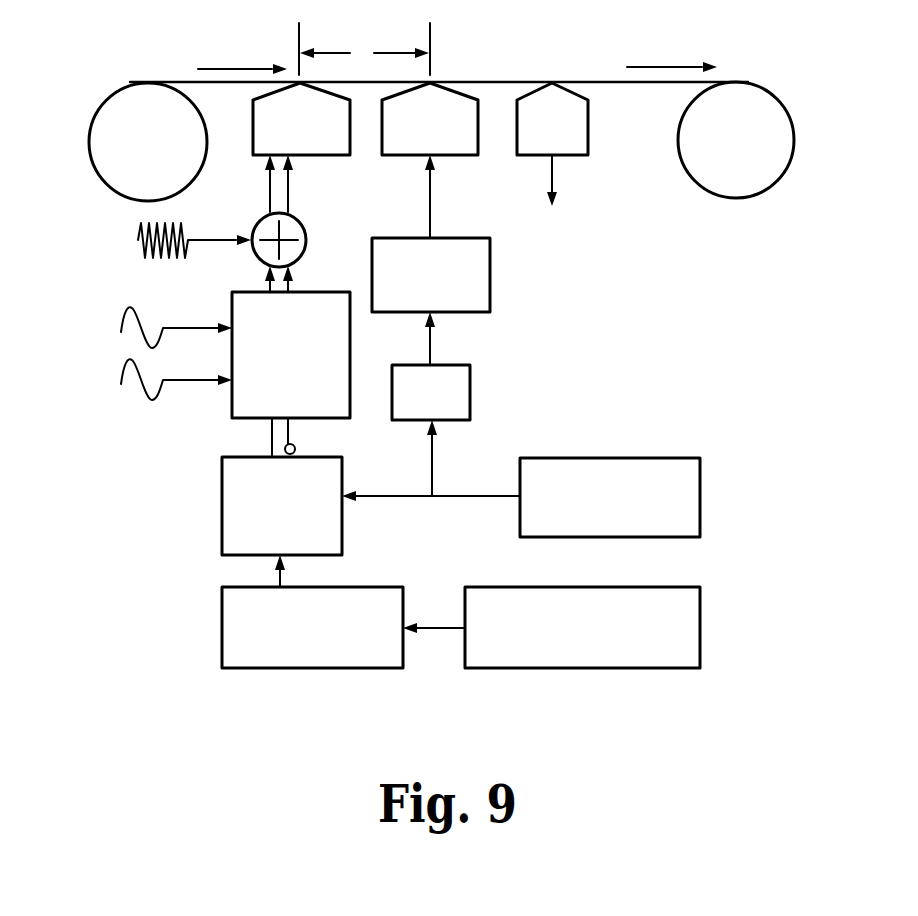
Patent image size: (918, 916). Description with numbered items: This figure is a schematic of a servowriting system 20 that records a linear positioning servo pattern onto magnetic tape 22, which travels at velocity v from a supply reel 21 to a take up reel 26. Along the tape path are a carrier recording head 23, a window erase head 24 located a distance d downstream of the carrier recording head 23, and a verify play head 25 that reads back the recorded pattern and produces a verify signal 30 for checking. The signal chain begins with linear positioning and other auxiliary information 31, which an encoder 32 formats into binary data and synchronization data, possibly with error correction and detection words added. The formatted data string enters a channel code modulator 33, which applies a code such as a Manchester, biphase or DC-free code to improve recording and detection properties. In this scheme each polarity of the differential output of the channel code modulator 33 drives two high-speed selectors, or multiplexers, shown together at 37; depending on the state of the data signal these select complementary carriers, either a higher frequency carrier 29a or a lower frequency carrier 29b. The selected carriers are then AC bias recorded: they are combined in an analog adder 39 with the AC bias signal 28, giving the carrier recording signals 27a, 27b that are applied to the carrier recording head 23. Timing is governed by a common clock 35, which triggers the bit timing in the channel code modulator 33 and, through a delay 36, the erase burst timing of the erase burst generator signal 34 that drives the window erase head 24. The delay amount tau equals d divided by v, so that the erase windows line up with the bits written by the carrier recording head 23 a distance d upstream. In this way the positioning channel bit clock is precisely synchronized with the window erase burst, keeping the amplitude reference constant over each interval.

The servowriting system 20 is at (516, 58).
The supply reel 21 is at (128, 200).
The tape 22 is at (613, 85).
The carrier recording head 23 is at (316, 138).
The window erase head 24 is at (446, 138).
The verify play head 25 is at (570, 138).
The take up reel 26 is at (718, 196).
The carrier recording signal 27a is at (267, 188).
The carrier recording signal 27b is at (291, 186).
The AC bias signal 28 is at (130, 252).
The higher frequency carrier 29a is at (118, 342).
The lower frequency carrier 29b is at (118, 394).
The verify signal 30 is at (559, 168).
The linear positioning and other auxiliary information 31 is at (557, 668).
The encoder 32 is at (308, 668).
The channel code modulator 33 is at (220, 512).
The erase burst generator signal 34 is at (490, 258).
The common clock 35 is at (615, 537).
The delay 36 is at (470, 371).
The high-speed selectors 37 is at (232, 412).
The analog adder 39 is at (257, 262).